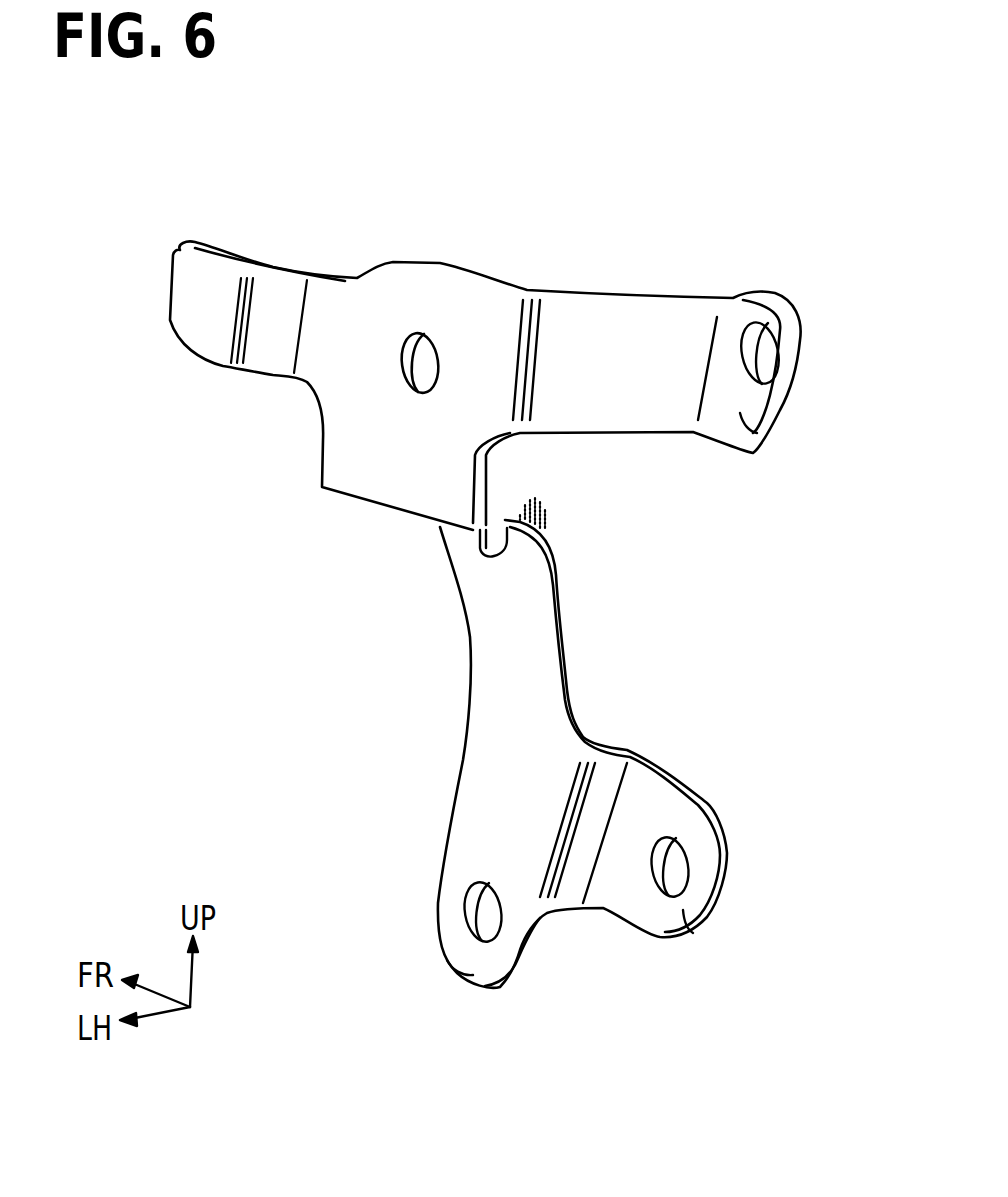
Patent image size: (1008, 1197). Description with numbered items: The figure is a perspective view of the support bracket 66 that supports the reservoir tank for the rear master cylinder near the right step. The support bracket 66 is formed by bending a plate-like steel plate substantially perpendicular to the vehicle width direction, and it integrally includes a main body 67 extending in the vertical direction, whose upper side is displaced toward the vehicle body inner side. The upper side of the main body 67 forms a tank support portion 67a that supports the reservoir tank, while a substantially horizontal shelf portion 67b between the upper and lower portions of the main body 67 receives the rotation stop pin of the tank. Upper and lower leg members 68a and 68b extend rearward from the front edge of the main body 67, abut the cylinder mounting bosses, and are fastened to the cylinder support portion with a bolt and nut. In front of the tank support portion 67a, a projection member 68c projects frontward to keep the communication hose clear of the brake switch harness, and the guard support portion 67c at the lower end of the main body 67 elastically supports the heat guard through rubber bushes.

The support bracket 66 is at (387, 262).
The main body 67 is at (497, 633).
The tank support portion 67a is at (343, 453).
The shelf portion 67b is at (490, 507).
The guard support portion 67c is at (457, 973).
The upper leg member 68a is at (742, 414).
The lower leg member 68b is at (690, 933).
The projection member 68c is at (183, 273).